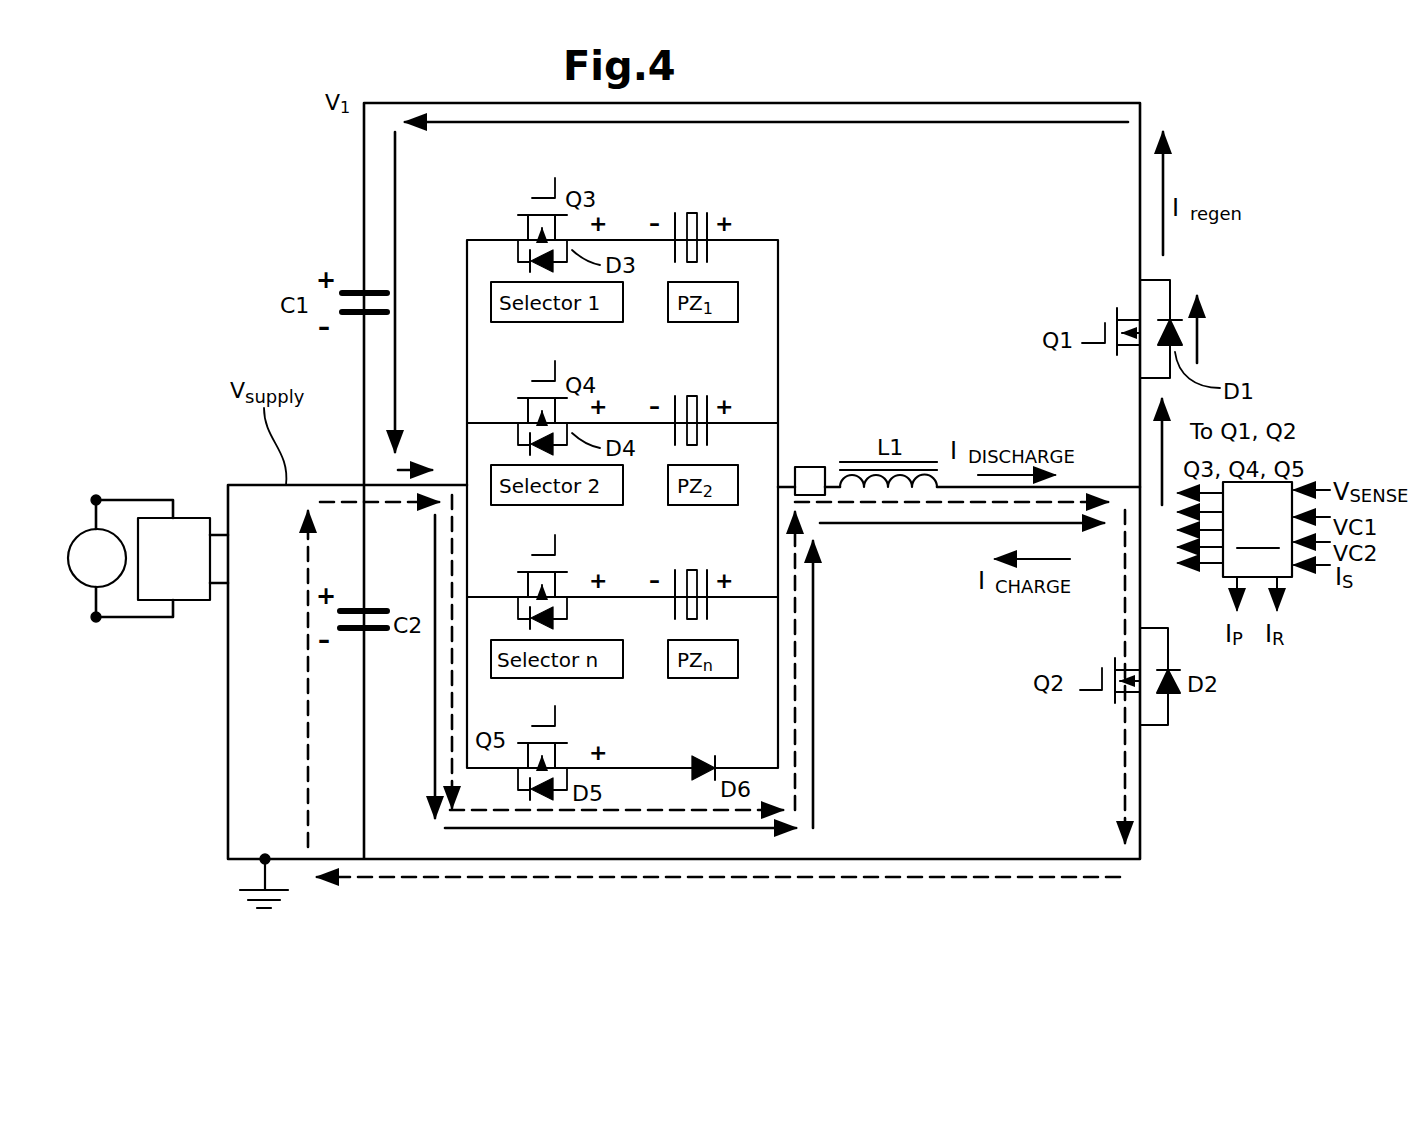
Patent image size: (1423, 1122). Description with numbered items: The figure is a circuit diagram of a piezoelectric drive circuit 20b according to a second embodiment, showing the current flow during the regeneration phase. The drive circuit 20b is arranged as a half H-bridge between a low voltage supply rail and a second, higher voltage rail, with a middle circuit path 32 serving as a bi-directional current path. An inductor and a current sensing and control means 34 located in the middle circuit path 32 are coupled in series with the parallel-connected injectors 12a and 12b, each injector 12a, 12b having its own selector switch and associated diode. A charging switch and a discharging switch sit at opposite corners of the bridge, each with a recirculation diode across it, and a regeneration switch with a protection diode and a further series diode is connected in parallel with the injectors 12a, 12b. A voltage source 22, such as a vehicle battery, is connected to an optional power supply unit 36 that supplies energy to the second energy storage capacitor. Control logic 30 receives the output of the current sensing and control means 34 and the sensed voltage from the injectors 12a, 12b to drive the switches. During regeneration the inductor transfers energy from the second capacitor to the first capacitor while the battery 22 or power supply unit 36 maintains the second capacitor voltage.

The drive circuit 20b is at (1285, 240).
The voltage source 22 is at (80, 585).
The control logic 30 is at (808, 467).
The middle circuit path 32 is at (1130, 485).
The current sensing and control means 34 is at (805, 483).
The power supply unit 36 is at (190, 528).
The injector 12a is at (690, 322).
The injector 12b is at (690, 505).